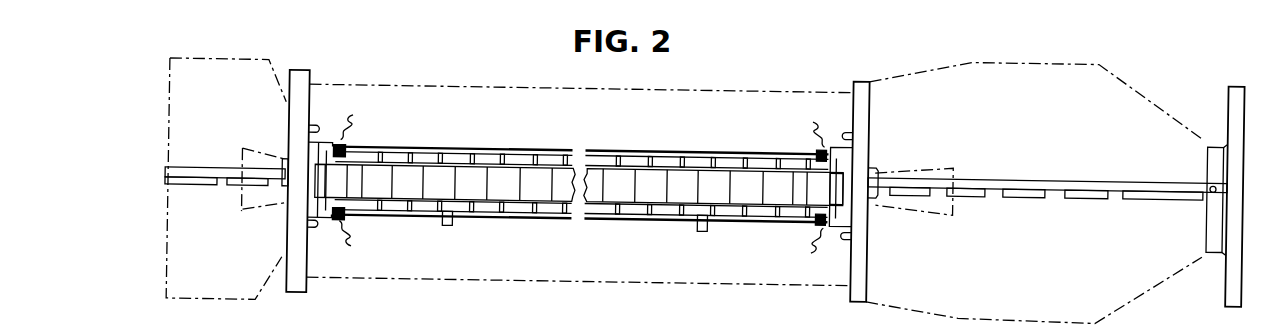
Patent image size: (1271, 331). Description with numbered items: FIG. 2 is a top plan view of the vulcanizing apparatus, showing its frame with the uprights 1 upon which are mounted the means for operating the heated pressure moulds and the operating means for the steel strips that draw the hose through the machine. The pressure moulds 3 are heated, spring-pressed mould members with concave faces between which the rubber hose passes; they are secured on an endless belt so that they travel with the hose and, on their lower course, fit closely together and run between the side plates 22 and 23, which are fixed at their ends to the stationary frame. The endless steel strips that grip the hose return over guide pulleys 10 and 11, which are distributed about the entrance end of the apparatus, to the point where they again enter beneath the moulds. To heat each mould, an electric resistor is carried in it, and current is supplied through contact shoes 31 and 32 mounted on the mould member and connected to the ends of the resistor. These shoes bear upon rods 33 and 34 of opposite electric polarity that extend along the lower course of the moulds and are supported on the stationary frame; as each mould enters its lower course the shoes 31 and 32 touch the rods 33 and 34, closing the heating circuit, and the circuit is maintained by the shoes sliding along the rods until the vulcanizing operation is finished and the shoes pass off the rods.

The uprights 1 is at (309, 70).
The pressure moulds 3 is at (658, 176).
The guide pulley 10 is at (232, 180).
The guide pulley 11 is at (184, 187).
The side plate 22 is at (733, 208).
The side plate 23 is at (732, 158).
The contact shoe 31 is at (538, 152).
The contact shoe 32 is at (538, 216).
The rod 33 is at (452, 150).
The rod 34 is at (514, 216).